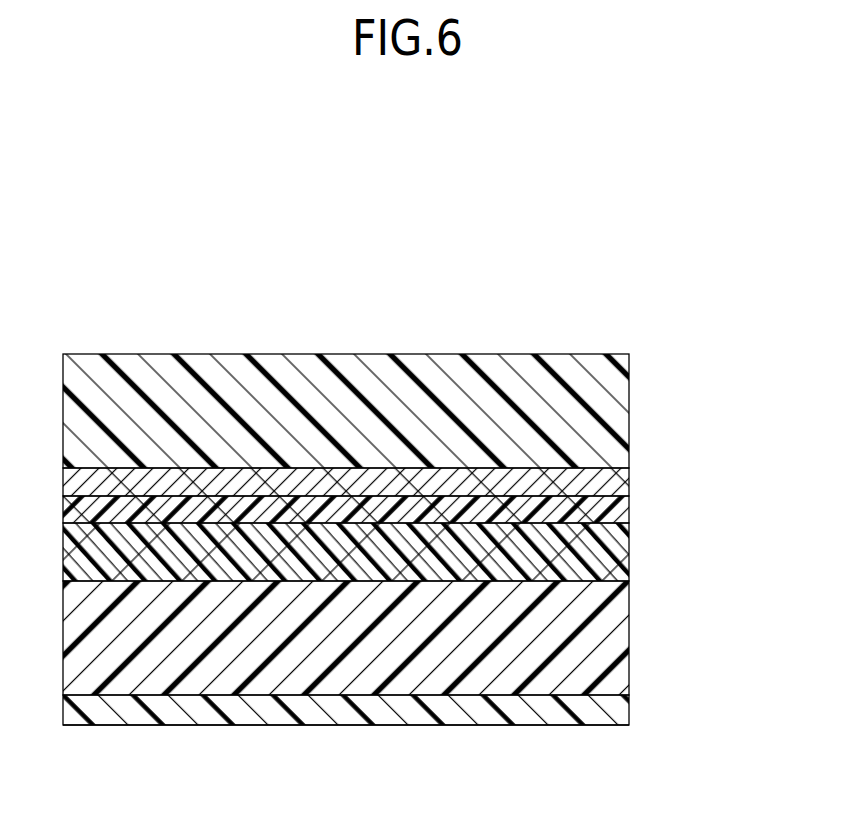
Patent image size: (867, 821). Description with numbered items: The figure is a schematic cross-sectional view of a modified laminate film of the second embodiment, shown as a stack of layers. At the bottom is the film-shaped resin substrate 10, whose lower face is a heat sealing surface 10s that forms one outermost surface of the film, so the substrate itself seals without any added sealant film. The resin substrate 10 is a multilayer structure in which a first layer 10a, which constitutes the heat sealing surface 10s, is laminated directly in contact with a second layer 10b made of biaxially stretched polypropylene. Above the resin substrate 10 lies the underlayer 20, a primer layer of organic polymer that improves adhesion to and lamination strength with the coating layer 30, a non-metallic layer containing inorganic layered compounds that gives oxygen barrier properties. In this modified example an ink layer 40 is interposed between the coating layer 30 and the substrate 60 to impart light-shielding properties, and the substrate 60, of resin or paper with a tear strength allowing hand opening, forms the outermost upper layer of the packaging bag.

The substrate 60 is at (620, 407).
The ink layer 40 is at (620, 483).
The coating layer 30 is at (620, 509).
The underlayer 20 is at (620, 548).
The resin substrate 10 is at (414, 656).
The second layer 10b is at (620, 643).
The first layer 10a is at (620, 713).
The heat sealing surface 10s is at (422, 726).